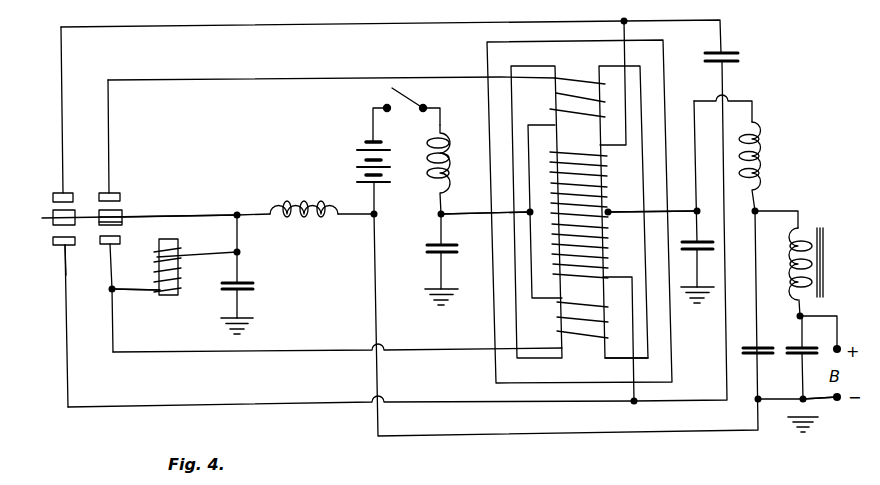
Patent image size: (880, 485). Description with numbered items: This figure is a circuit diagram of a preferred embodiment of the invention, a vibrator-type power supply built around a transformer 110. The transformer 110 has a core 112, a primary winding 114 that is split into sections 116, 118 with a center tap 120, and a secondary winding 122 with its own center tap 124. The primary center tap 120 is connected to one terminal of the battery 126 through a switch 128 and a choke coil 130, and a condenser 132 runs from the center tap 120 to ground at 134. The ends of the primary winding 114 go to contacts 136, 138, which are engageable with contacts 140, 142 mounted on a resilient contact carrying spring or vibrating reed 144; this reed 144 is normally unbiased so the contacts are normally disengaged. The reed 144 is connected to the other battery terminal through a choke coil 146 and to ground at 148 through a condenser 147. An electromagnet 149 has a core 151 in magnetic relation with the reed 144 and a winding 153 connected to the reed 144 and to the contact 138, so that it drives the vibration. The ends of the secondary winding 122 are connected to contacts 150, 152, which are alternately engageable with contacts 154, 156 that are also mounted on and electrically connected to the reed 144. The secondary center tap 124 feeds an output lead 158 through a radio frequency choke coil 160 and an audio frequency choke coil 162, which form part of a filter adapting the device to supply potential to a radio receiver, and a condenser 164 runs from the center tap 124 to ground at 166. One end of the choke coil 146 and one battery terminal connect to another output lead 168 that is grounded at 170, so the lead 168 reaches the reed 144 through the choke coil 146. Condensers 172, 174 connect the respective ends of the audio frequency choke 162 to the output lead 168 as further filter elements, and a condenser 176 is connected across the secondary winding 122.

The transformer 110 is at (663, 58).
The core 112 is at (655, 360).
The primary winding 114 is at (578, 77).
The section 116 is at (557, 93).
The section 118 is at (560, 313).
The center tap 120 is at (530, 212).
The secondary winding 122 is at (606, 180).
The center tap 124 is at (609, 212).
The battery 126 is at (358, 150).
The switch 128 is at (412, 99).
The choke coil 130 is at (453, 156).
The condenser 132 is at (450, 246).
The ground 134 is at (456, 292).
The contact 136 is at (120, 197).
The contact 138 is at (114, 245).
The contact 140 is at (122, 213).
The contact 142 is at (122, 222).
The vibrating reed 144 is at (188, 217).
The choke coil 146 is at (302, 205).
The condenser 147 is at (248, 282).
The ground 148 is at (246, 318).
The electromagnet 149 is at (166, 293).
The contact 150 is at (72, 197).
The core 151 is at (178, 288).
The contact 152 is at (70, 246).
The winding 153 is at (180, 262).
The contact 154 is at (53, 215).
The contact 156 is at (53, 220).
The output lead 158 is at (838, 340).
The radio frequency choke coil 160 is at (762, 156).
The audio frequency choke coil 162 is at (825, 272).
The condenser 164 is at (683, 233).
The ground 166 is at (683, 304).
The output lead 168 is at (825, 400).
The ground 170 is at (795, 425).
The condenser 172 is at (745, 348).
The condenser 174 is at (797, 346).
The condenser 176 is at (733, 53).